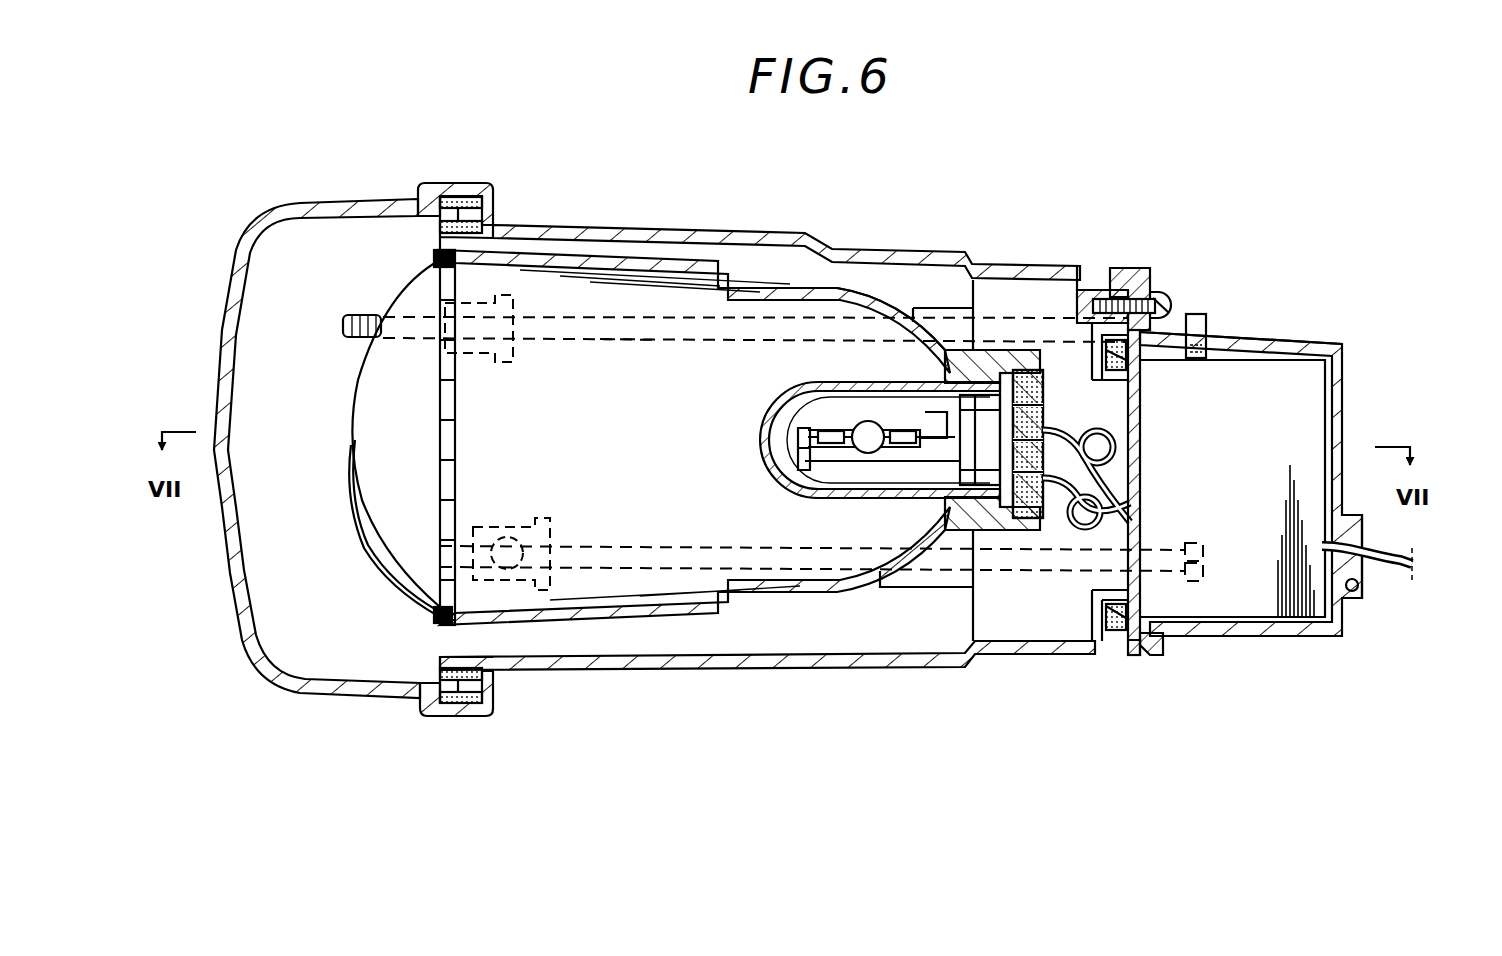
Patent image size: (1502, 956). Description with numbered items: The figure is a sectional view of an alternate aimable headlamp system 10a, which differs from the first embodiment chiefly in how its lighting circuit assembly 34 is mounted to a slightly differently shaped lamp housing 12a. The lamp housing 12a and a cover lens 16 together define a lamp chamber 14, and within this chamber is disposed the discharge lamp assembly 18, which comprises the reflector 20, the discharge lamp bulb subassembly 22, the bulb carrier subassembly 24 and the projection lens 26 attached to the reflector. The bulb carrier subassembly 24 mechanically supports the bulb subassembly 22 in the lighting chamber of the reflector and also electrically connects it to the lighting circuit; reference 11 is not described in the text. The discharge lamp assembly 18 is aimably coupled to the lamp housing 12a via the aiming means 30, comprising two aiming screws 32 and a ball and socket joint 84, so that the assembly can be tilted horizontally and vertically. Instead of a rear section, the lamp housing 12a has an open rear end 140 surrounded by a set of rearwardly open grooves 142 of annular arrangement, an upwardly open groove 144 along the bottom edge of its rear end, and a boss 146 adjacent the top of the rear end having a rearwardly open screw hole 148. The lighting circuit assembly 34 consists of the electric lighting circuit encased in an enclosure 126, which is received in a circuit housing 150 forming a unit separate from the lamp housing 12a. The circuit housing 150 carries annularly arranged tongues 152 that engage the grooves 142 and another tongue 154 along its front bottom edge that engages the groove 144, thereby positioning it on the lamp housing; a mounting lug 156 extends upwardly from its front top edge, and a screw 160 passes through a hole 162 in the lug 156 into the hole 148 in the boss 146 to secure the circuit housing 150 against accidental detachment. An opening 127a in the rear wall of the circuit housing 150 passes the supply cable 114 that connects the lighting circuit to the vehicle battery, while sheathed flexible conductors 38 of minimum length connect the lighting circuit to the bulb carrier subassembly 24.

The aimable headlamp system 10a is at (356, 156).
The lamp housing 12a is at (571, 218).
The cover lens 16 is at (224, 300).
The projection lens 26 is at (352, 393).
The discharge lamp assembly 18 is at (343, 503).
The lamp chamber 14 is at (333, 608).
The reflector inner surface 11 is at (796, 302).
The reflector 20 is at (832, 290).
The aiming means 30 is at (519, 362).
The aiming screws 32 is at (628, 342).
The ball and socket joint 84 is at (511, 521).
The discharge lamp bulb subassembly 22 is at (830, 417).
The bulb carrier subassembly 24 is at (916, 480).
The sheathed flexible conductors 38 is at (1110, 485).
The open rear end 140 is at (1133, 398).
The tongue 154 is at (1132, 658).
The mounting lug 156 is at (1140, 288).
The boss 146 is at (1086, 288).
The screw hole 148 is at (1112, 290).
The hole 162 is at (1158, 305).
The screw 160 is at (1165, 325).
The tongues 152 is at (1098, 375).
The rearwardly open grooves 142 is at (1130, 362).
The upwardly open groove 144 is at (1150, 652).
The lighting circuit assembly 34 is at (1320, 348).
The circuit housing 150 is at (1270, 340).
The enclosure 126 is at (1318, 375).
The opening 127a is at (1357, 592).
The cable 114 is at (1385, 555).